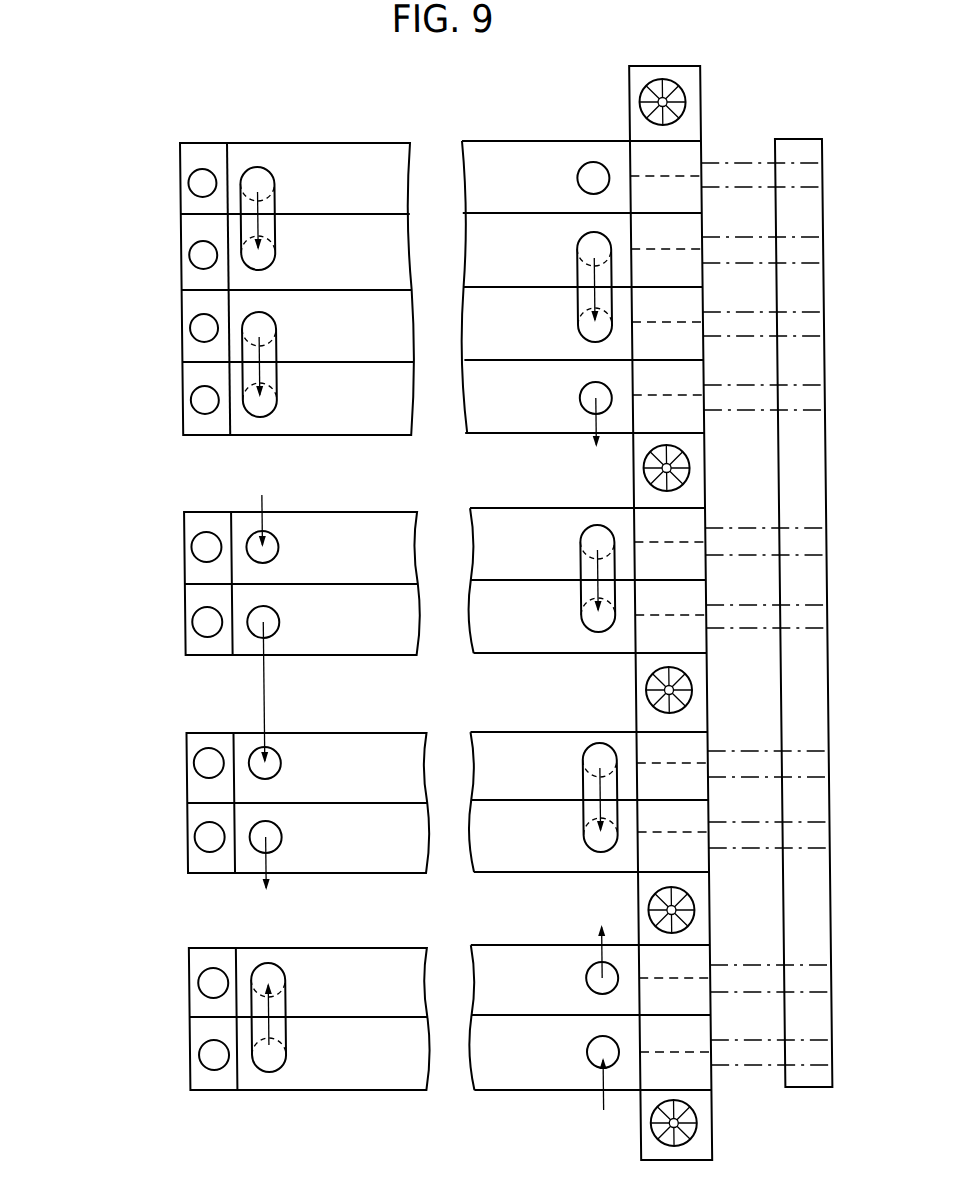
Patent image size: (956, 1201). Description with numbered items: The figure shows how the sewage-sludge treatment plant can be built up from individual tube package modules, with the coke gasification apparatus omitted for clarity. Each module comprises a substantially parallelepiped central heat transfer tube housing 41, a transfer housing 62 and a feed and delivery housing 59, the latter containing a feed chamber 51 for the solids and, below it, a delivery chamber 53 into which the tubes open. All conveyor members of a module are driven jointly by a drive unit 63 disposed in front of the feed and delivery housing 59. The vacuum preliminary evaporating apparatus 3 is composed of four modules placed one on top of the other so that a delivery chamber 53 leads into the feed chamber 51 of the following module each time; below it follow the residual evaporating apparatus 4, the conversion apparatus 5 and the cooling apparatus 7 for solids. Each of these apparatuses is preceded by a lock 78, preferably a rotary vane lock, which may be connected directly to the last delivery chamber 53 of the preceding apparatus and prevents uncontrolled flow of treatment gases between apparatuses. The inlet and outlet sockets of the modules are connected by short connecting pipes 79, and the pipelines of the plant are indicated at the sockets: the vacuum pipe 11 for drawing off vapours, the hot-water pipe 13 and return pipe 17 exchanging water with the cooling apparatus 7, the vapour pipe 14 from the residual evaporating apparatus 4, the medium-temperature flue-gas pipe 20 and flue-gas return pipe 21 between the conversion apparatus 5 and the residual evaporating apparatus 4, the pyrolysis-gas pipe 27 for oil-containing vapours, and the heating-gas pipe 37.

The vacuum preliminary evaporating apparatus 3 is at (165, 145).
The transfer housing 62 is at (205, 141).
The heat transfer tube housing 41 is at (362, 141).
The vacuum pipe 11 is at (199, 251).
The short connecting pipes 79 is at (268, 225).
The residual evaporating apparatus 4 is at (166, 505).
The vapour pipe 14 is at (201, 547).
The medium-temperature flue-gas pipe 20 is at (272, 550).
The flue-gas return pipe 21 is at (273, 622).
The conversion apparatus 5 is at (172, 730).
The pyrolysis-gas pipe 27 is at (205, 763).
The cooling apparatus for solids 7 is at (176, 942).
The heating-gas pipe 37 is at (200, 983).
The hot-water pipe 13 is at (587, 978).
The return pipe 17 is at (587, 1050).
The lock 78 is at (689, 92).
The feed and delivery housing 59 is at (712, 144).
The drive unit 63 is at (808, 148).
The feed chamber 51 is at (650, 170).
The delivery chamber 53 is at (650, 206).